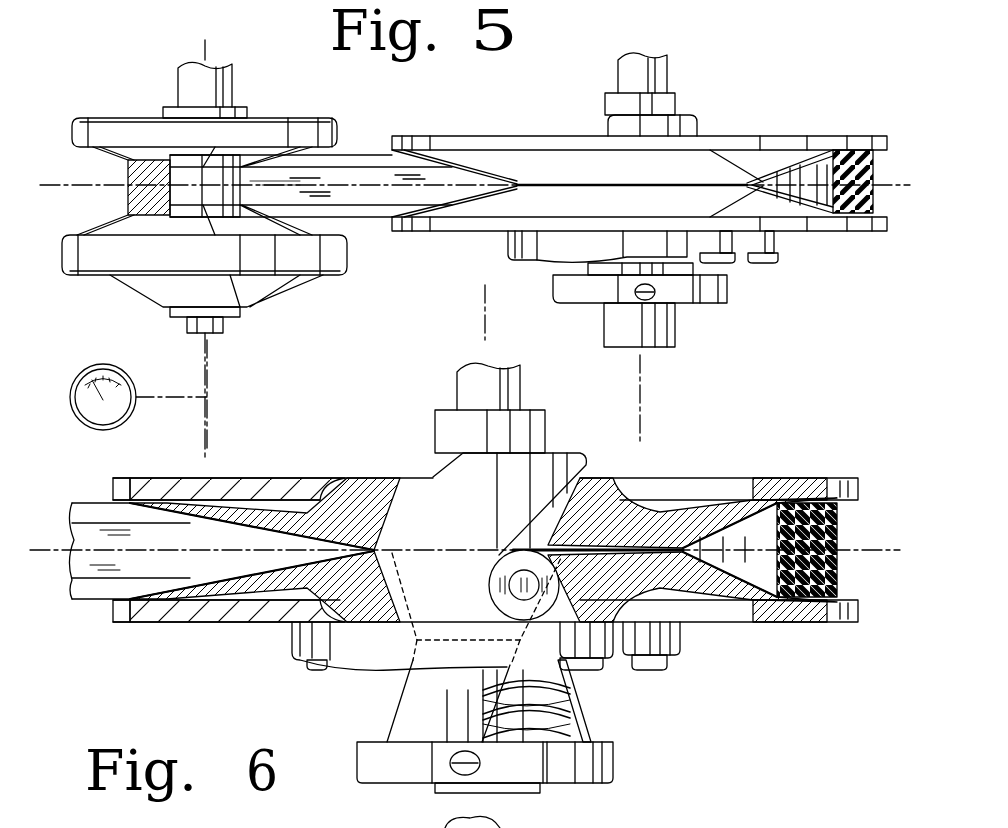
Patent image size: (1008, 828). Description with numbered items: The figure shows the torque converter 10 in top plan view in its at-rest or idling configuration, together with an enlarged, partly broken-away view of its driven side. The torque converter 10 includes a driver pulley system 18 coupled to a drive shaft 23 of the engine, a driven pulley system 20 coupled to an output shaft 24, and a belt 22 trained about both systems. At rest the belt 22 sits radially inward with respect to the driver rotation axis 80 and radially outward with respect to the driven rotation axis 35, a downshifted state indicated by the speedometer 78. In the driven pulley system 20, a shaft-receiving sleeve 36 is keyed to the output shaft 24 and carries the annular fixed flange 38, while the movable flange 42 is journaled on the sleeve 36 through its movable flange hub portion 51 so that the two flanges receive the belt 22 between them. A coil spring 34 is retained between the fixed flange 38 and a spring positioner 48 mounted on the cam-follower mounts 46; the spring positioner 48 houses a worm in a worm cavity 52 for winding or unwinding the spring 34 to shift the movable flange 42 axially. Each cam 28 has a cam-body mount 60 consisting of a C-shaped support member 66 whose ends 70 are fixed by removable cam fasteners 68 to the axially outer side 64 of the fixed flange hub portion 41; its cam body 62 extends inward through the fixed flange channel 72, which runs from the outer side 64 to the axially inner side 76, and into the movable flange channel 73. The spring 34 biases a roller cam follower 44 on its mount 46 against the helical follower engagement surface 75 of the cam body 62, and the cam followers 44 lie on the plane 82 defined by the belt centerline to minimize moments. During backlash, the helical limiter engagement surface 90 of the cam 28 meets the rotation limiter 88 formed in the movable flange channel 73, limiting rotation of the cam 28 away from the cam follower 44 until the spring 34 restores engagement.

In FIG. 5, the torque converter 10 is at (706, 72).
In FIG. 5, the driver pulley system 18 is at (270, 290).
In FIG. 5, the driven pulley system 20 is at (642, 177).
In FIG. 6, the driven pulley system 20 is at (477, 573).
In FIG. 5, the belt 22 is at (365, 217).
In FIG. 6, the belt 22 is at (836, 550).
In FIG. 5, the drive shaft 23 is at (186, 94).
In FIG. 5, the output shaft 24 is at (626, 82).
In FIG. 6, the output shaft 24 is at (463, 395).
In FIG. 5, the cam 28 is at (728, 258).
In FIG. 6, the cam 28 is at (352, 680).
In FIG. 5, the coil spring 34 is at (680, 265).
In FIG. 6, the coil spring 34 is at (584, 702).
In FIG. 5, the driven rotation axis 35 is at (480, 308).
In FIG. 6, the driven rotation axis 35 is at (636, 381).
In FIG. 5, the shaft-receiving sleeve 36 is at (613, 318).
In FIG. 6, the shaft-receiving sleeve 36 is at (532, 434).
In FIG. 5, the fixed flange 38 is at (860, 233).
In FIG. 6, the fixed flange 38 is at (833, 622).
In FIG. 6, the fixed flange hub portion 41 is at (352, 622).
In FIG. 5, the movable flange 42 is at (836, 136).
In FIG. 6, the movable flange 42 is at (779, 478).
In FIG. 6, the cam follower 44 is at (528, 572).
In FIG. 6, the cam-follower mount 46 is at (400, 585).
In FIG. 5, the spring positioner 48 is at (737, 294).
In FIG. 6, the spring positioner 48 is at (530, 767).
In FIG. 6, the movable flange hub portion 51 is at (353, 478).
In FIG. 6, the worm cavity 52 is at (481, 766).
In FIG. 6, the cam-body mount 60 is at (300, 662).
In FIG. 5, the cam body 62 is at (611, 130).
In FIG. 6, the cam body 62 is at (426, 478).
In FIG. 6, the axially outer side 64 is at (208, 622).
In FIG. 6, the support member 66 is at (390, 665).
In FIG. 6, the cam fasteners 68 is at (322, 672).
In FIG. 6, the end 70 is at (292, 633).
In FIG. 6, the fixed flange channel 72 is at (372, 565).
In FIG. 6, the movable flange channel 73 is at (400, 522).
In FIG. 6, the follower engagement surface 75 is at (489, 578).
In FIG. 6, the axially inner side 76 is at (207, 581).
In FIG. 5, the speedometer 78 is at (95, 366).
In FIG. 5, the driver rotation axis 80 is at (213, 370).
In FIG. 5, the plane 82 is at (378, 172).
In FIG. 6, the rotation limiter 88 is at (422, 505).
In FIG. 6, the limiter engagement surface 90 is at (403, 532).